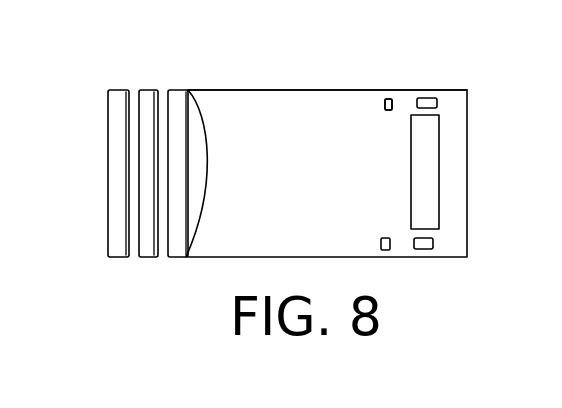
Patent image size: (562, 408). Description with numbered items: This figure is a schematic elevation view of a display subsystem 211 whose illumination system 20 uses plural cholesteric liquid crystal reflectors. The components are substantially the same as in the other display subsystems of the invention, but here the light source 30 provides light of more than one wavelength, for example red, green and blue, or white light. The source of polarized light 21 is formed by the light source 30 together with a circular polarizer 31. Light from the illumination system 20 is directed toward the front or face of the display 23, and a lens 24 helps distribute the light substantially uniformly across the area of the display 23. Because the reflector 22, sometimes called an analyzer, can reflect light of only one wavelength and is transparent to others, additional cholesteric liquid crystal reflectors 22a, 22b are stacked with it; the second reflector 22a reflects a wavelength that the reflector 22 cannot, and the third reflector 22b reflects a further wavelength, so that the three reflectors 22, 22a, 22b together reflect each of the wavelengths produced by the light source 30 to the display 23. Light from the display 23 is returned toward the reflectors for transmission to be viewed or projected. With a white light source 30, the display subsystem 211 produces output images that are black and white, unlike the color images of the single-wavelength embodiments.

The illumination system 20 is at (410, 80).
The display subsystem 211 is at (296, 81).
The source of polarized light 21 is at (376, 112).
The reflector 22 is at (178, 88).
The cholesteric liquid crystal reflector 22a is at (147, 88).
The cholesteric liquid crystal reflector 22b is at (122, 88).
The display 23 is at (437, 167).
The lens 24 is at (203, 217).
The light source 30 is at (428, 98).
The circular polarizer 31 is at (393, 100).